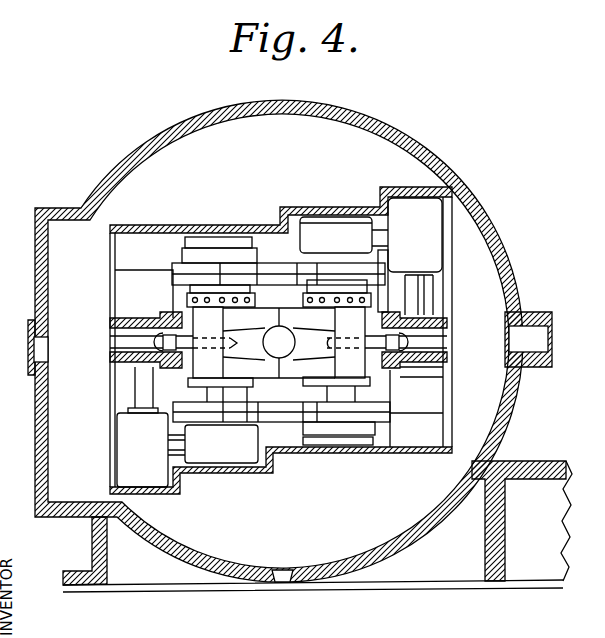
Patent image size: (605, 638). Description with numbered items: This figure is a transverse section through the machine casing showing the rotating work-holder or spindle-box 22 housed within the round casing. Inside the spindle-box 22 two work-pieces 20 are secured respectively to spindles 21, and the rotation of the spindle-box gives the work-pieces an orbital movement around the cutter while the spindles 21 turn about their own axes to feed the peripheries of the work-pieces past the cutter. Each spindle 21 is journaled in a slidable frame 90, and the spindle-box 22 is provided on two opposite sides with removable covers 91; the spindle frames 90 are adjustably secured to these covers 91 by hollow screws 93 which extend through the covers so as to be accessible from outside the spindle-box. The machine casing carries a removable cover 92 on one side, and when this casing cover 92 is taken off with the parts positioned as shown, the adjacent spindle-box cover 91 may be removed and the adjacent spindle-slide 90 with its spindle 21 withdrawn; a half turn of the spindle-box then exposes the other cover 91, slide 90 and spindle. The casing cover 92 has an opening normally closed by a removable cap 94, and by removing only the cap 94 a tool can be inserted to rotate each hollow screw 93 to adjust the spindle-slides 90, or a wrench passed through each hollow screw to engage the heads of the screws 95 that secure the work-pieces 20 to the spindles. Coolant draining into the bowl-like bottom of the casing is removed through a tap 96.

The work-piece 20 is at (279, 343).
The spindle 21 is at (279, 341).
The work-holder 22 is at (248, 225).
The slidable frame 90 is at (180, 280).
The removable cover 91 is at (110, 408).
The casing cover 92 is at (37, 436).
The hollow screw 93 is at (112, 343).
The removable cap 94 is at (29, 350).
The screw 95 is at (170, 358).
The tap 96 is at (283, 583).